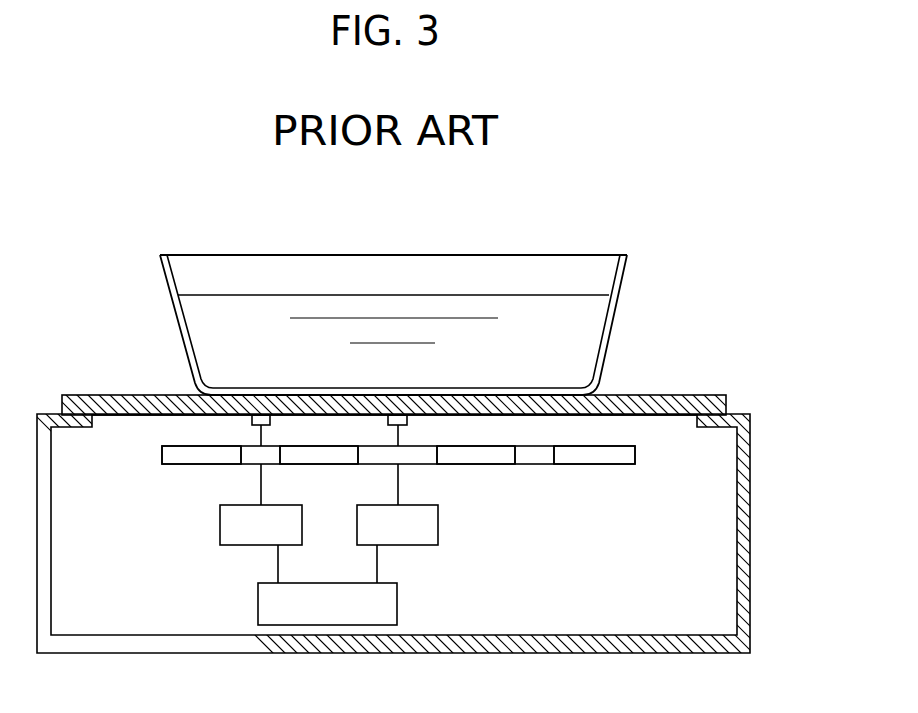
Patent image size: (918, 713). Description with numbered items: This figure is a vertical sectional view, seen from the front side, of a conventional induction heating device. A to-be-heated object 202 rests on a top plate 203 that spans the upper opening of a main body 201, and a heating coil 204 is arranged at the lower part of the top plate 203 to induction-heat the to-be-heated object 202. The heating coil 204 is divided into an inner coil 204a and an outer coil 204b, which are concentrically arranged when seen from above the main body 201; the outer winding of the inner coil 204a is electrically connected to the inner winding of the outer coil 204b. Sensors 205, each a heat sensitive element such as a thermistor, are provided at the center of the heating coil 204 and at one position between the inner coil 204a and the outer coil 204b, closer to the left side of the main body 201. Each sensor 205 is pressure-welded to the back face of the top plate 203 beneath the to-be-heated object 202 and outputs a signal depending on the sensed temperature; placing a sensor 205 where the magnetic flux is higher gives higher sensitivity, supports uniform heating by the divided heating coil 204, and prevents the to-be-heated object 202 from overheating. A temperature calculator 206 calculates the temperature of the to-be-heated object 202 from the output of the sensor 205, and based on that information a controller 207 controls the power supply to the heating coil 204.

The main body 201 is at (750, 420).
The to-be-heated object 202 is at (625, 268).
The top plate 203 is at (726, 400).
The heating coil 204 is at (635, 455).
The inner coil 204a is at (482, 480).
The outer coil 204b is at (600, 482).
The sensor 205 is at (448, 430).
The temperature calculator 206 is at (465, 548).
The controller 207 is at (397, 606).